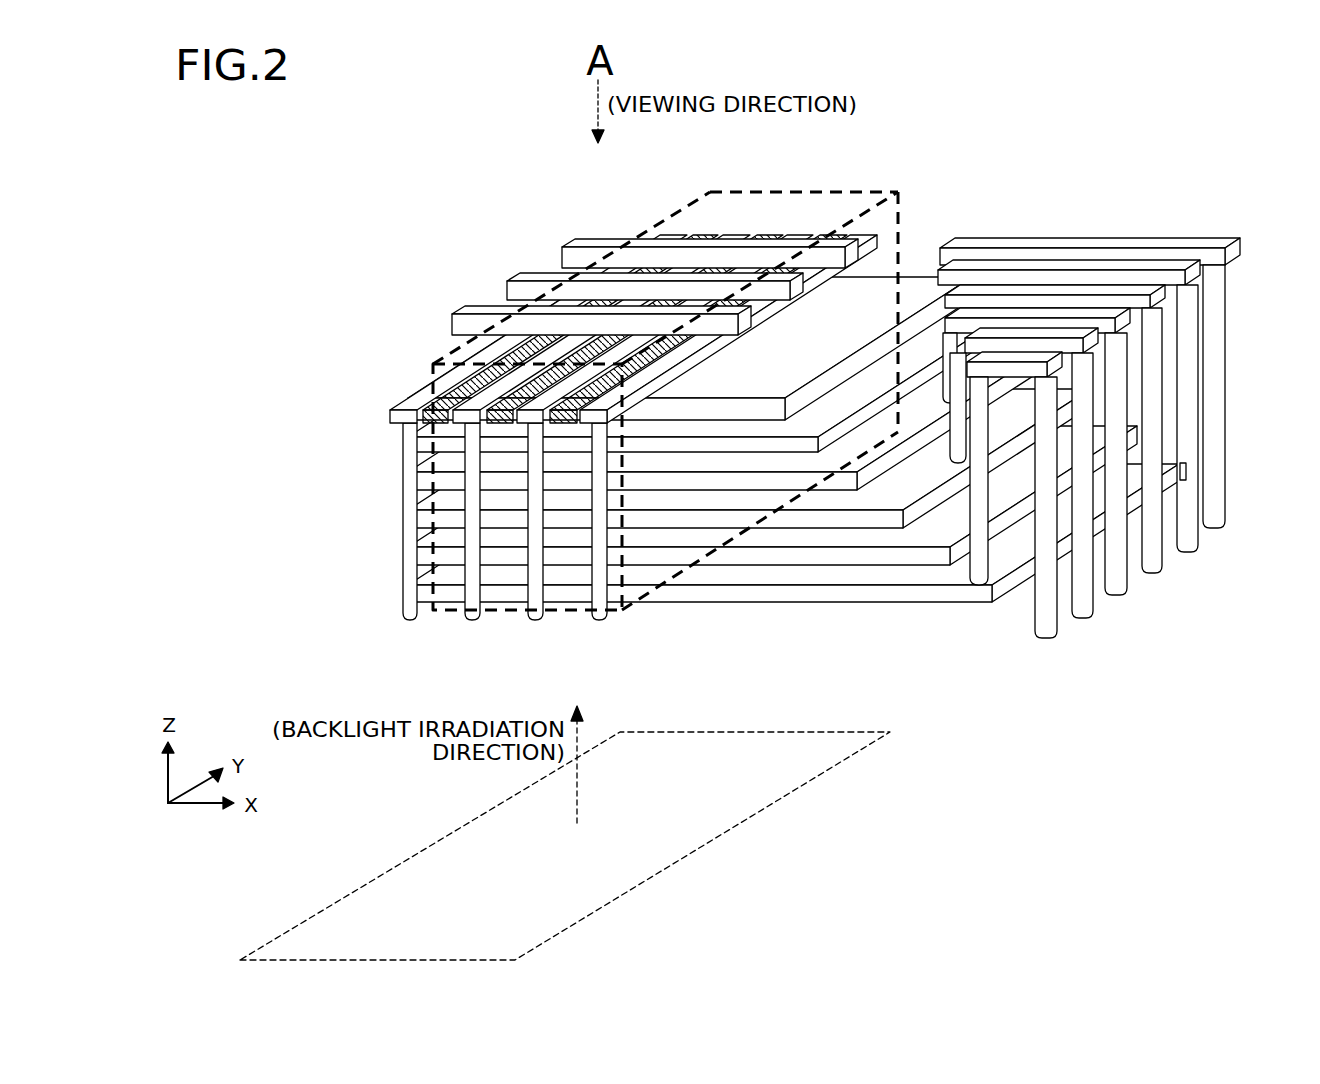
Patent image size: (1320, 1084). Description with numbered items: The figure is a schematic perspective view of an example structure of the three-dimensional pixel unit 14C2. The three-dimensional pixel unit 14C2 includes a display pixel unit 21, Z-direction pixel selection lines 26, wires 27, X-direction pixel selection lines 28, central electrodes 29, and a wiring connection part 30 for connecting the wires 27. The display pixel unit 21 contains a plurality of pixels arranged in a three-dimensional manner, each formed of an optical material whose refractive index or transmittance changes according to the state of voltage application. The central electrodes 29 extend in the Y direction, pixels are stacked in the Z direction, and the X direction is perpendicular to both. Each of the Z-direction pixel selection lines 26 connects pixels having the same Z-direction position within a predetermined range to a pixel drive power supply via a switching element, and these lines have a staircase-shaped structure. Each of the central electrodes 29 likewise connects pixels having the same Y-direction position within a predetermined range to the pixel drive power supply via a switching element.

The three-dimensional pixel unit 14C2 is at (968, 127).
The display pixel unit 21 is at (706, 193).
The Z-direction pixel selection lines 26 is at (655, 408).
The wires 27 is at (1232, 523).
The X-direction pixel selection lines 28 is at (593, 247).
The central electrodes 29 is at (495, 395).
The wiring connection part 30 is at (673, 597).